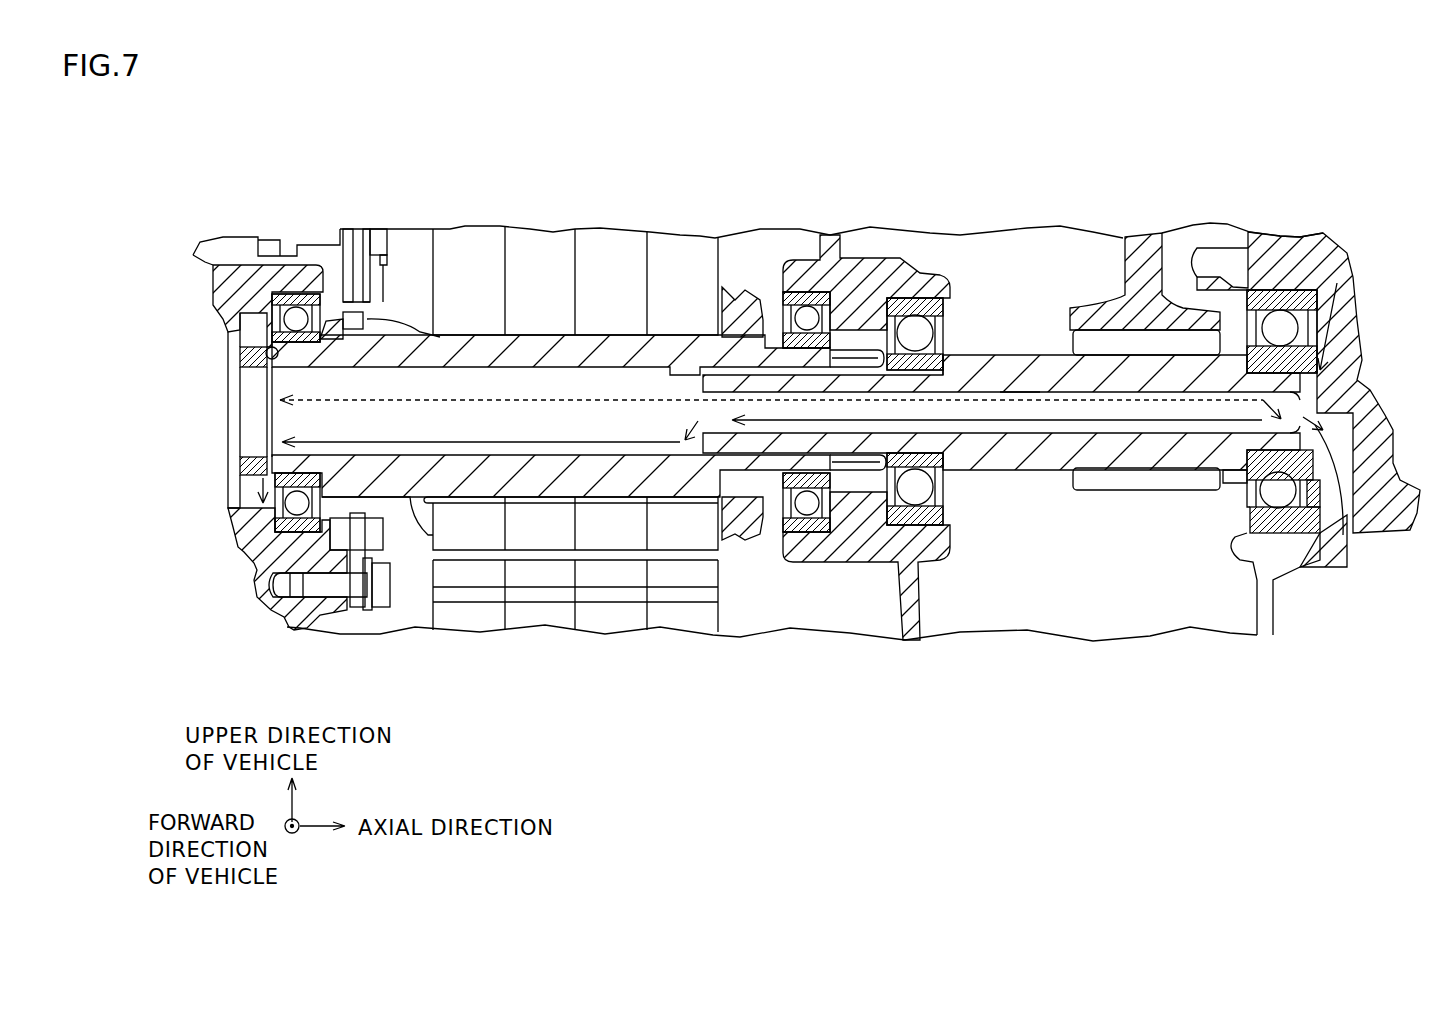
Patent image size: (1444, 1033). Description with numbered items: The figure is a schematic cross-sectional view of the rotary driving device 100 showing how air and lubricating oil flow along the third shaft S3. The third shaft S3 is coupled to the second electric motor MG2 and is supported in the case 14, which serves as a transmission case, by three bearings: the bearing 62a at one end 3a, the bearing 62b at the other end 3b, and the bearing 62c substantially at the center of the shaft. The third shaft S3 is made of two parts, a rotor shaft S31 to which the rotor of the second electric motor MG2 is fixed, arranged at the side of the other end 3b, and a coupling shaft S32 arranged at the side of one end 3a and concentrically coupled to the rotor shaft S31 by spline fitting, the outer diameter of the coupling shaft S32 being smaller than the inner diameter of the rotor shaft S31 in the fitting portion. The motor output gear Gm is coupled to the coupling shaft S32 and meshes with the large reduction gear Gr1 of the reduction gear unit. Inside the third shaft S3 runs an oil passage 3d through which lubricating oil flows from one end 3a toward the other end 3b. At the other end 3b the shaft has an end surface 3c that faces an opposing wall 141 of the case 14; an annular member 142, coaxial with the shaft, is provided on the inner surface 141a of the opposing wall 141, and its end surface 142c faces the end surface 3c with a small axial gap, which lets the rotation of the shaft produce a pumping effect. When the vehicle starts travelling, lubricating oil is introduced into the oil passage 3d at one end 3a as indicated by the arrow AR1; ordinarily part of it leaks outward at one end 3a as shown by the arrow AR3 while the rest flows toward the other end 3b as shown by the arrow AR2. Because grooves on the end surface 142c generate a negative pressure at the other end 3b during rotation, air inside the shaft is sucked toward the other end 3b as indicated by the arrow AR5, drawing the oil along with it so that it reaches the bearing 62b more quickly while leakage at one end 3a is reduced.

The rotary driving device 100 is at (1372, 181).
The case 14 is at (290, 275).
The second electric motor MG2 is at (557, 220).
The oil passage 3d is at (928, 398).
The arrow indicating air flow AR5 is at (1020, 397).
The large reduction gear Gr1 is at (1145, 345).
The output gear Gm is at (1158, 490).
The end surface 142c is at (265, 350).
The annular member 142 is at (238, 350).
The inner surface 141a is at (250, 384).
The opposing wall 141 is at (238, 406).
The end surface 3c is at (262, 467).
The other end 3b is at (283, 472).
The one end 3a is at (1340, 400).
The bearing 62b is at (300, 533).
The bearing 62c is at (805, 533).
The bearing 62a is at (1277, 533).
The arrow indicating oil introduction AR1 is at (1323, 318).
The arrow indicating oil flow AR2 is at (1213, 422).
The arrow indicating oil leakage AR3 is at (1350, 421).
The rotor shaft S31 is at (622, 478).
The coupling shaft S32 is at (1001, 555).
The third shaft S3 is at (786, 566).